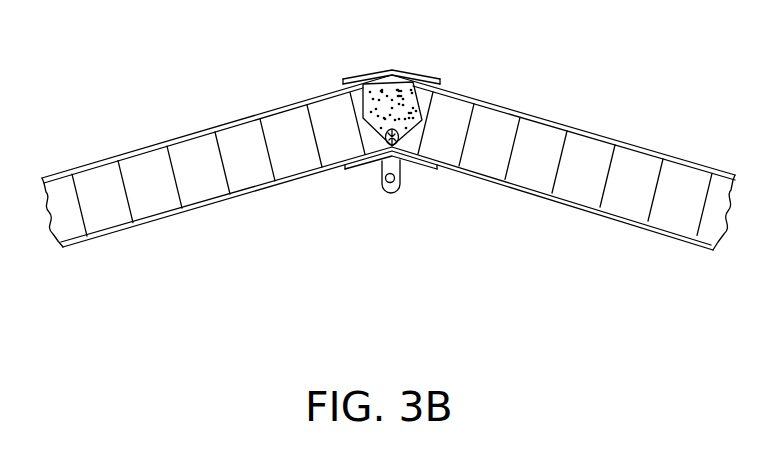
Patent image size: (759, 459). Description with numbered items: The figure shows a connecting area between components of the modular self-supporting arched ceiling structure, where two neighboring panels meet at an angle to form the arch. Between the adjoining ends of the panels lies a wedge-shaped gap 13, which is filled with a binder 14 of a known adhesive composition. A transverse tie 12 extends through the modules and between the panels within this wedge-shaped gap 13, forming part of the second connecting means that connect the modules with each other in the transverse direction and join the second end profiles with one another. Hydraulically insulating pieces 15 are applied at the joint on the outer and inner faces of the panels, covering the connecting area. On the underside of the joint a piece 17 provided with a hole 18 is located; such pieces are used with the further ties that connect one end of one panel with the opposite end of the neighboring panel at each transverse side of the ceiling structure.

The transverse tie 12 is at (386, 142).
The wedge-shaped gap 13 is at (408, 115).
The binder 14 is at (397, 98).
The hydraulically insulating piece 15 is at (347, 80).
The piece 17 is at (402, 177).
The hole 18 is at (382, 190).